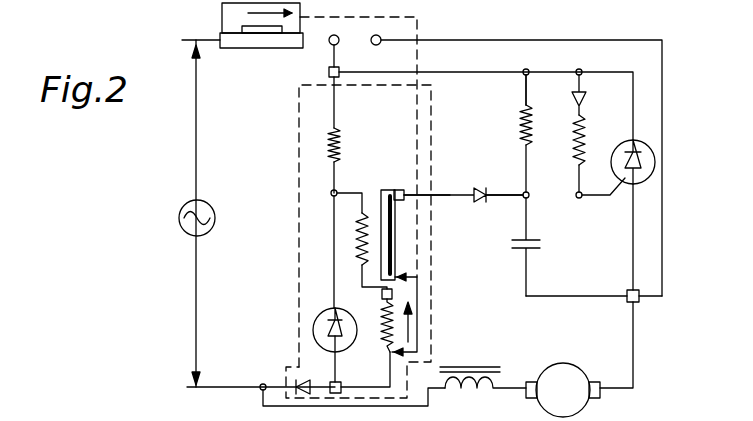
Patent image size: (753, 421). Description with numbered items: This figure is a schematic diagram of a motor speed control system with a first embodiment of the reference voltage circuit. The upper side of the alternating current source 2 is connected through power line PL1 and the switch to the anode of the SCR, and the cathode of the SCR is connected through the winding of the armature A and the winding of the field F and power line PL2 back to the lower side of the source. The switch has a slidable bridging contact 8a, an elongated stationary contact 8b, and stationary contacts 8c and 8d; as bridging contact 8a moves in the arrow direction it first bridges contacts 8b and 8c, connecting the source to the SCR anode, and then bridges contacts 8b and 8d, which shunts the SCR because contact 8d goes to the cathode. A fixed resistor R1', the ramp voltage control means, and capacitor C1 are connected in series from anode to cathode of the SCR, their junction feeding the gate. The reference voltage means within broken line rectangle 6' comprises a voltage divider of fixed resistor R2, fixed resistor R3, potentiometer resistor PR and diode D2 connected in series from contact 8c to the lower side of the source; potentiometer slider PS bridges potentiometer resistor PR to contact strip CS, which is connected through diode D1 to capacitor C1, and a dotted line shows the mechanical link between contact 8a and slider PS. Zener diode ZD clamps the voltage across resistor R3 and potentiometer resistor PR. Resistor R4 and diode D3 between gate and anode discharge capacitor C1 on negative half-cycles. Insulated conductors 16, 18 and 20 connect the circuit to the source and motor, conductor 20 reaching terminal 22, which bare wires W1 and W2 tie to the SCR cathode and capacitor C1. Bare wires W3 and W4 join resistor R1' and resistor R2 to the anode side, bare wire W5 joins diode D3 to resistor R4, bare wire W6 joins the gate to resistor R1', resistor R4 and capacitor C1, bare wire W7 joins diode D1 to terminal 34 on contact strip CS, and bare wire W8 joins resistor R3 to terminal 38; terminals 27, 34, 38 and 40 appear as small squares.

The alternating current source 2 is at (184, 208).
The conductor 16 is at (204, 50).
The conductor 18 is at (272, 384).
The conductor 20 is at (634, 357).
The terminal 22 is at (641, 302).
The terminal 27 is at (329, 72).
The terminal 34 is at (399, 190).
The terminal 38 is at (383, 299).
The terminal 40 is at (341, 385).
The broken line rectangle 6' is at (341, 241).
The slidable bridging contact 8a is at (222, 16).
The elongated stationary contact 8b is at (258, 48).
The stationary contact 8c is at (330, 44).
The stationary contact 8d is at (379, 45).
The power line PL1 is at (196, 40).
The power line PL2 is at (205, 387).
The fixed resistor R1' is at (503, 133).
The fixed resistor R2 is at (342, 143).
The fixed resistor R3 is at (356, 236).
The resistor R4 is at (574, 155).
The potentiometer resistor PR is at (382, 332).
The contact strip CS is at (393, 242).
The potentiometer slider PS is at (424, 308).
The zener diode ZD is at (324, 312).
The diode D1 is at (483, 190).
The diode D2 is at (318, 370).
The diode D3 is at (586, 100).
The capacitor C1 is at (541, 244).
The silicon controlled rectifier SCR is at (655, 160).
The bare wire W1 is at (632, 218).
The bare wire W2 is at (592, 295).
The bare wire W3 is at (529, 96).
The bare wire W4 is at (440, 72).
The bare wire W5 is at (586, 126).
The bare wire W6 is at (512, 200).
The bare wire W7 is at (456, 196).
The bare wire W8 is at (362, 278).
The armature A is at (583, 366).
The field F is at (486, 368).